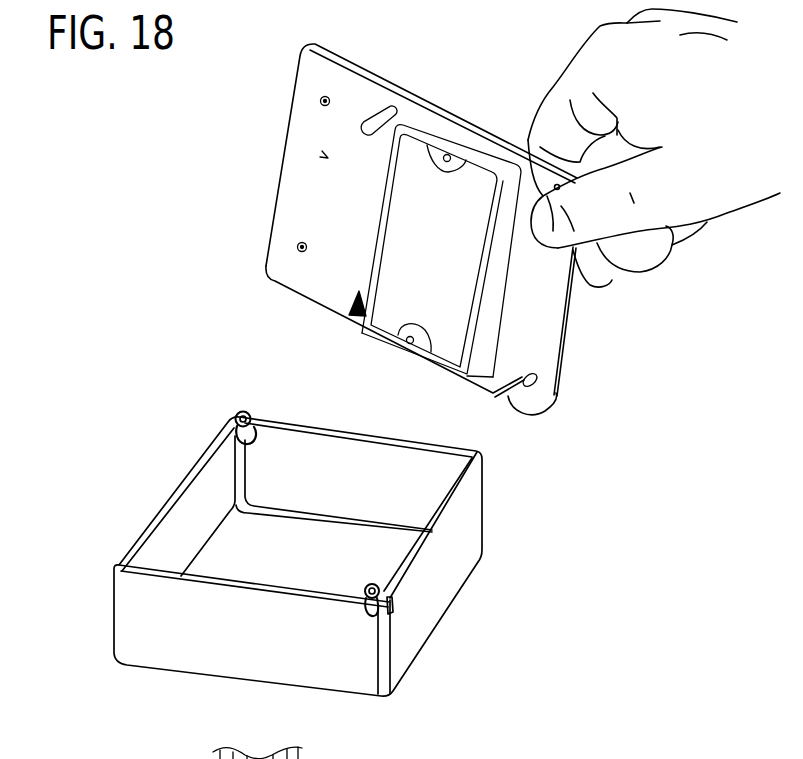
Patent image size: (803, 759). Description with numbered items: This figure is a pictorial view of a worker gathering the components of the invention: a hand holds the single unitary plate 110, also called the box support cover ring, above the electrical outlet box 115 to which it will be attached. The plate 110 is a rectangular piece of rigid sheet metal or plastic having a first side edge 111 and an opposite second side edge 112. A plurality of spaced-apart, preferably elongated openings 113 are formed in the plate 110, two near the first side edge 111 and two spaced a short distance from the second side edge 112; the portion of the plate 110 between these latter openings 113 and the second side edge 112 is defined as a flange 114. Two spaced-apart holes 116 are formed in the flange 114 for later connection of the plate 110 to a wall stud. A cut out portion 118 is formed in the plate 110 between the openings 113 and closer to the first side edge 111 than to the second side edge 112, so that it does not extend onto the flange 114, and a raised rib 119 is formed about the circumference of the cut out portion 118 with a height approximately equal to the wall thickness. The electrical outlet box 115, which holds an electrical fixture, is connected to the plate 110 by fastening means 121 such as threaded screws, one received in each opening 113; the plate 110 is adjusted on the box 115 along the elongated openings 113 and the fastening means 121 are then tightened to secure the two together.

The unitary plate 110 is at (300, 187).
The first side edge 111 is at (565, 310).
The second side edge 112 is at (272, 218).
The openings 113 is at (385, 108).
The flange 114 is at (327, 157).
The electrical outlet box 115 is at (400, 681).
The holes 116 is at (319, 100).
The cut out portion 118 is at (376, 258).
The raised rib 119 is at (437, 140).
The fastening means 121 is at (242, 412).